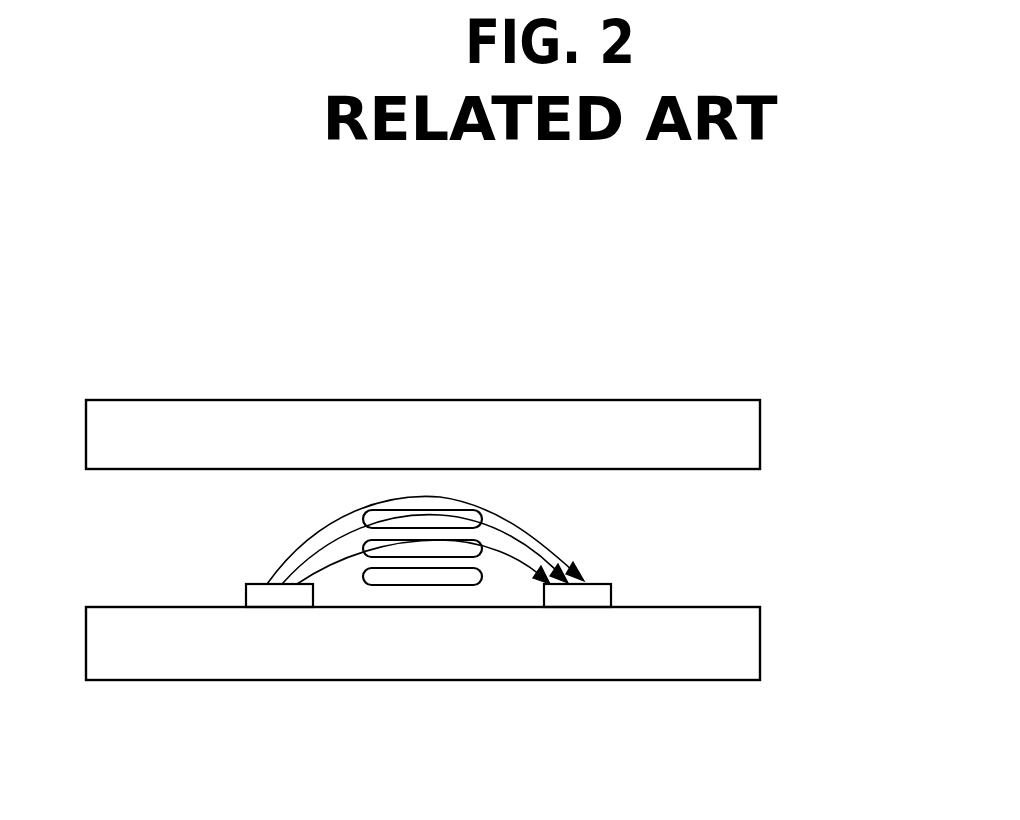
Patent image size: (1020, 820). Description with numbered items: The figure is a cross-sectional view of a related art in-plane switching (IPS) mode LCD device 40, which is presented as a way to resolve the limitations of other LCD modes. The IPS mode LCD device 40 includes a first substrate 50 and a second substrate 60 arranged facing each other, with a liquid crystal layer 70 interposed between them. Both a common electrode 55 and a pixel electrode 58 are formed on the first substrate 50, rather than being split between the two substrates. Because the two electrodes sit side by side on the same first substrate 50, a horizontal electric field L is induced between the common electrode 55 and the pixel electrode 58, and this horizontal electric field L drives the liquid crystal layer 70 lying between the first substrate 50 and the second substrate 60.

The IPS mode LCD device 40 is at (692, 356).
The first substrate 50 is at (792, 609).
The common electrode 55 is at (588, 595).
The pixel electrode 58 is at (277, 598).
The second substrate 60 is at (792, 397).
The liquid crystal layer 70 is at (792, 477).
The horizontal electric field L is at (542, 522).